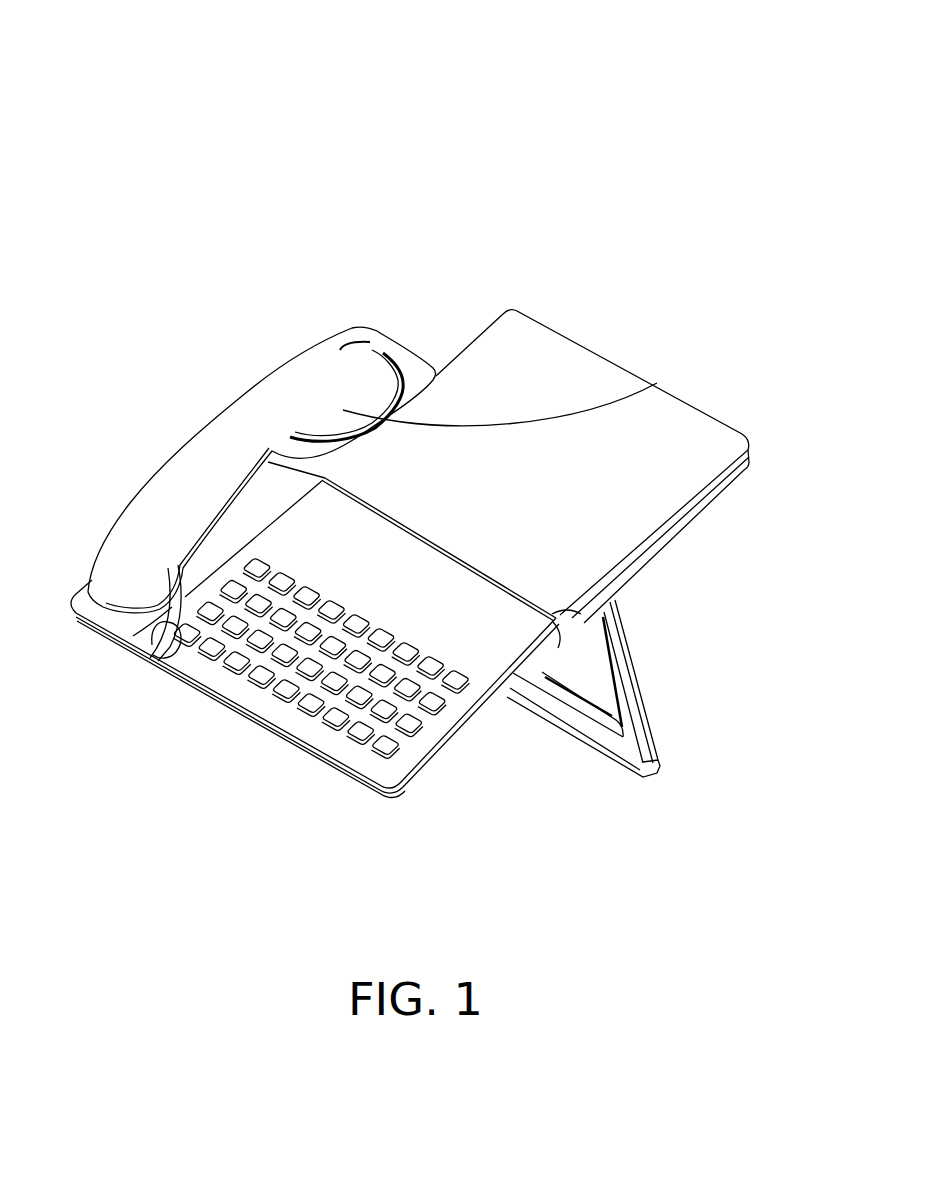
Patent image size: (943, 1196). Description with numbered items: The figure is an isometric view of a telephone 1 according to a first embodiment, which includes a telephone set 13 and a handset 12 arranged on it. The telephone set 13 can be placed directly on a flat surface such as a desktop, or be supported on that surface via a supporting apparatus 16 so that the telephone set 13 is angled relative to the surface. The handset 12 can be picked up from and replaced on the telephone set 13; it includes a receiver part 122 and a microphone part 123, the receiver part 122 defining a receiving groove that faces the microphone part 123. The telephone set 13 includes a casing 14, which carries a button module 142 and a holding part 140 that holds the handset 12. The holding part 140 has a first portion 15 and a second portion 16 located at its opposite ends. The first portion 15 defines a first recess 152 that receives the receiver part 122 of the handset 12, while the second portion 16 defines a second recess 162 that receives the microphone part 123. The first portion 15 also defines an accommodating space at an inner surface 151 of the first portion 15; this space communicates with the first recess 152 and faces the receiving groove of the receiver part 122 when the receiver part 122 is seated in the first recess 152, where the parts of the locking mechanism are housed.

The telephone 1 is at (393, 102).
The handset 12 is at (217, 443).
The receiver part 122 is at (657, 383).
The microphone part 123 is at (125, 637).
The telephone set 13 is at (490, 660).
The casing 14 is at (423, 773).
The holding part 140 is at (242, 517).
The button module 142 is at (265, 672).
The first portion 15 is at (593, 283).
The inner surface 151 is at (400, 364).
The first recess 152 is at (387, 352).
The second portion 16 is at (160, 646).
The second recess 162 is at (177, 652).